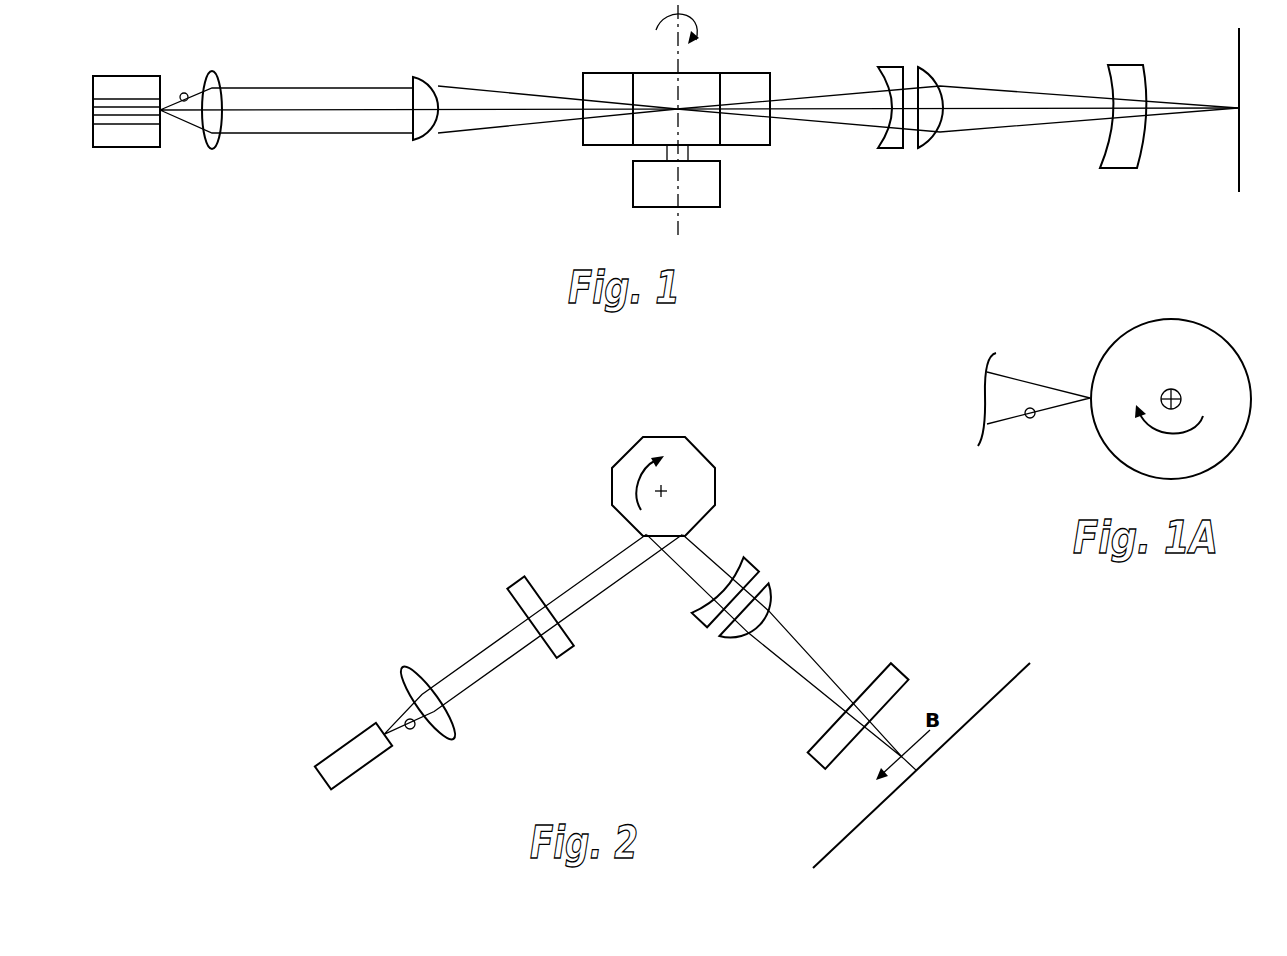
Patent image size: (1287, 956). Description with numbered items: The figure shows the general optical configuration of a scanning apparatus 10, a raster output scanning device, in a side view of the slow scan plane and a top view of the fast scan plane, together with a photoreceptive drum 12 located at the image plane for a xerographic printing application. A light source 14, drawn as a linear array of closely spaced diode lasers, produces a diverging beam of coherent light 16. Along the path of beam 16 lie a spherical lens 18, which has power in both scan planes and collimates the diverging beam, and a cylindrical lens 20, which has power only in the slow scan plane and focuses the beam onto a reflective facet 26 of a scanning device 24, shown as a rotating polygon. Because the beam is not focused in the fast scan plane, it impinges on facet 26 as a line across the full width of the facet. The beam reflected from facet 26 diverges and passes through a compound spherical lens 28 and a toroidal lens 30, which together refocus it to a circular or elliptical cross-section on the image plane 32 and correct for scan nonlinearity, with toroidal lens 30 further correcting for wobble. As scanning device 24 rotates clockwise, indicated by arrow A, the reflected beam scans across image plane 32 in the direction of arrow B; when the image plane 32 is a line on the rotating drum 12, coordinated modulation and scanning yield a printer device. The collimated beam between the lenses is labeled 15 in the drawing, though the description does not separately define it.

In FIG. 1, the scanning apparatus 10 is at (310, 194).
In FIG. 2, the scanning apparatus 10 is at (434, 572).
In FIG. 1A, the photoreceptive drum 12 is at (1112, 343).
In FIG. 1, the light source 14 is at (138, 148).
In FIG. 2, the light source 14 is at (358, 776).
In FIG. 1, the light beam 15 is at (345, 108).
In FIG. 1, the beam of coherent light 16 is at (188, 93).
In FIG. 1A, the beam of coherent light 16 is at (1036, 420).
In FIG. 2, the beam of coherent light 16 is at (412, 731).
In FIG. 1, the spherical lens 18 is at (217, 75).
In FIG. 2, the spherical lens 18 is at (455, 723).
In FIG. 1, the cylindrical lens 20 is at (425, 76).
In FIG. 2, the cylindrical lens 20 is at (560, 651).
In FIG. 1, the scanning device 24 is at (600, 147).
In FIG. 2, the scanning device 24 is at (700, 450).
In FIG. 1, the reflective facet 26 is at (705, 72).
In FIG. 2, the reflective facet 26 is at (658, 539).
In FIG. 1, the compound spherical lens 28 is at (875, 51).
In FIG. 2, the compound spherical lens 28 is at (670, 620).
In FIG. 1, the toroidal lens 30 is at (1126, 65).
In FIG. 2, the toroidal lens 30 is at (808, 756).
In FIG. 1, the image plane 32 is at (1238, 161).
In FIG. 2, the image plane 32 is at (996, 694).